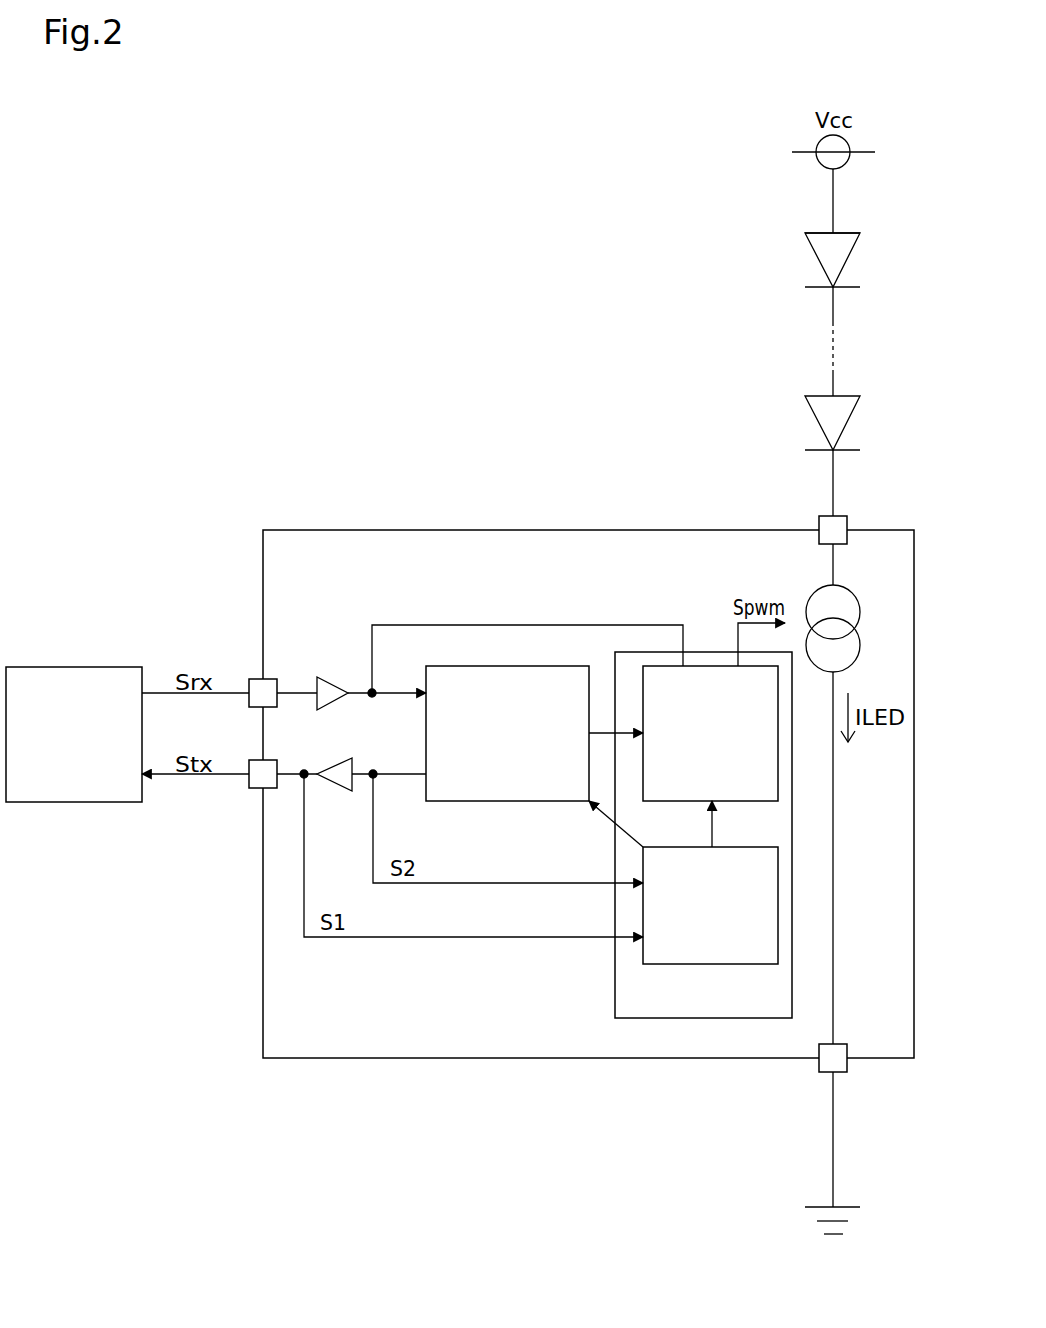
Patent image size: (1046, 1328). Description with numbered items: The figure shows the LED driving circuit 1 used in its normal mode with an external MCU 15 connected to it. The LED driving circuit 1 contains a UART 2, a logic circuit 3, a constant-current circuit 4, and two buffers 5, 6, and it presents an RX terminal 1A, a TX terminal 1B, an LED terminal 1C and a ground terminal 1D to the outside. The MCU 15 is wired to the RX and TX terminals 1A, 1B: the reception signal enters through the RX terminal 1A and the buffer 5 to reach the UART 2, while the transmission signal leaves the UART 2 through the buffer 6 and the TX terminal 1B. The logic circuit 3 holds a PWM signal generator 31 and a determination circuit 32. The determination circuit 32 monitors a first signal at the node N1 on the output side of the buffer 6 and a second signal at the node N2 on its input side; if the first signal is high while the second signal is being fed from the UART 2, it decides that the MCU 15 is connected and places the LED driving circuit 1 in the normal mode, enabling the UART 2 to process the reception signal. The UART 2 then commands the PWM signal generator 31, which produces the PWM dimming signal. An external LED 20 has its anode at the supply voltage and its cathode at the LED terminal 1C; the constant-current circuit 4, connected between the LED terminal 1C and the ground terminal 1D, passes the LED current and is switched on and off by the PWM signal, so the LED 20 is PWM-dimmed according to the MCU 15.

The LED driving circuit 1 is at (898, 530).
The RX terminal 1A is at (262, 677).
The TX terminal 1B is at (258, 789).
The LED terminal 1C is at (819, 517).
The ground terminal 1D is at (840, 1073).
The UART 2 is at (575, 666).
The logic circuit 3 is at (712, 652).
The constant-current circuit 4 is at (860, 625).
The buffer 5 is at (330, 678).
The buffer 6 is at (326, 792).
The MCU 15 is at (128, 667).
The LED 20 is at (848, 340).
The PWM signal generator 31 is at (672, 801).
The determination circuit 32 is at (668, 964).
The node N1 is at (304, 771).
The node N2 is at (373, 771).